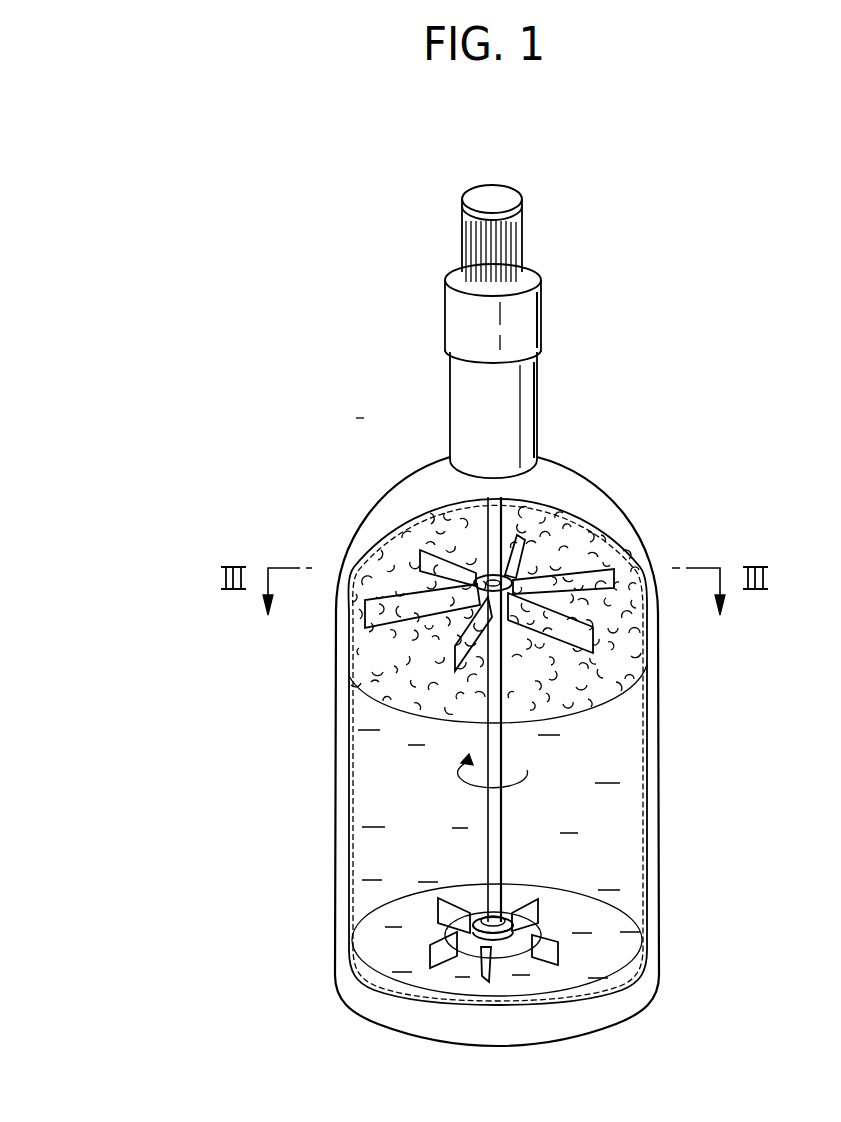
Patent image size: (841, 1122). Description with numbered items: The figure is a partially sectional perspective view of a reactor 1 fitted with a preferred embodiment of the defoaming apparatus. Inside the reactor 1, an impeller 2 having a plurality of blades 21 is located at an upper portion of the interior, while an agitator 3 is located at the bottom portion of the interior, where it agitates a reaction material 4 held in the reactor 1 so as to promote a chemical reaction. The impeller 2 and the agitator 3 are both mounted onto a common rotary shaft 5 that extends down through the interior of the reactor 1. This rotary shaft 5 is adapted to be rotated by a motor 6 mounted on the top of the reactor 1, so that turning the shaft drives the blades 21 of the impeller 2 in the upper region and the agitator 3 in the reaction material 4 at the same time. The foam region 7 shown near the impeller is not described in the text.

The reactor 1 is at (661, 705).
The impeller 2 is at (457, 543).
The blades 21 is at (400, 598).
The agitator 3 is at (515, 947).
The reaction material 4 is at (380, 772).
The rotary shaft 5 is at (502, 828).
The motor 6 is at (526, 231).
The foam 7 is at (367, 667).